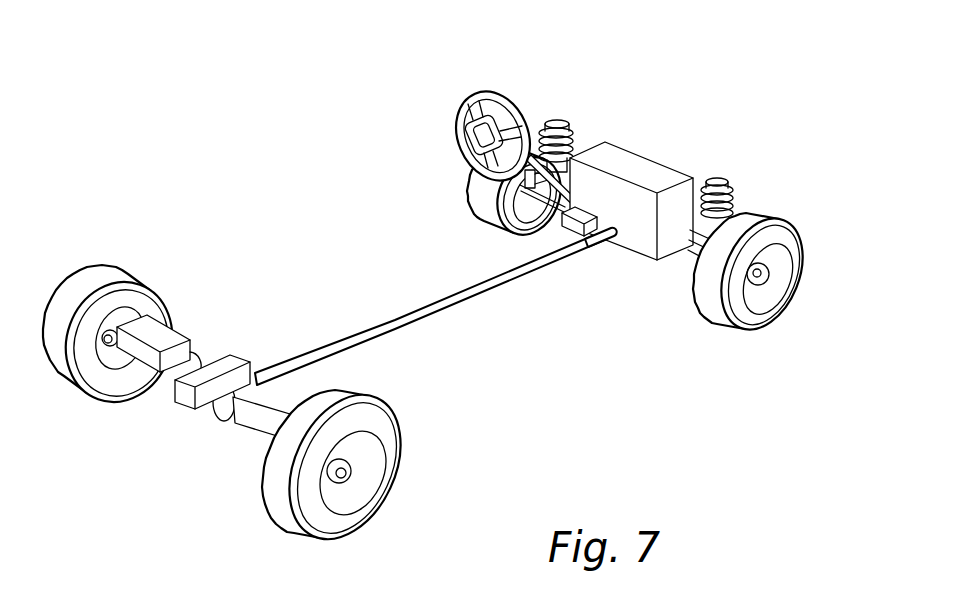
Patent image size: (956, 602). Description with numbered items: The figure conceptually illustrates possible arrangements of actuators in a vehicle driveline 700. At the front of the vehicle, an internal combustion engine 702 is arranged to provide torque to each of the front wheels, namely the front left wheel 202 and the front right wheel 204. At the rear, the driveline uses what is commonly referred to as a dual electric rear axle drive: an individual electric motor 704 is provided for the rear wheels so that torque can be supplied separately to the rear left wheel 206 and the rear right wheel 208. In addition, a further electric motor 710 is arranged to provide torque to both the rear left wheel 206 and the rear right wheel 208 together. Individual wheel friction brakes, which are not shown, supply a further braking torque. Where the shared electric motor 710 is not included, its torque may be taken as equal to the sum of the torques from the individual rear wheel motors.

The driveline 700 is at (333, 123).
The internal combustion engine 702 is at (620, 158).
The electric motor 704 is at (263, 430).
The electric motor 710 is at (230, 360).
The front left wheel 202 is at (478, 204).
The front right wheel 204 is at (762, 210).
The rear left wheel 206 is at (131, 373).
The rear right wheel 208 is at (397, 482).